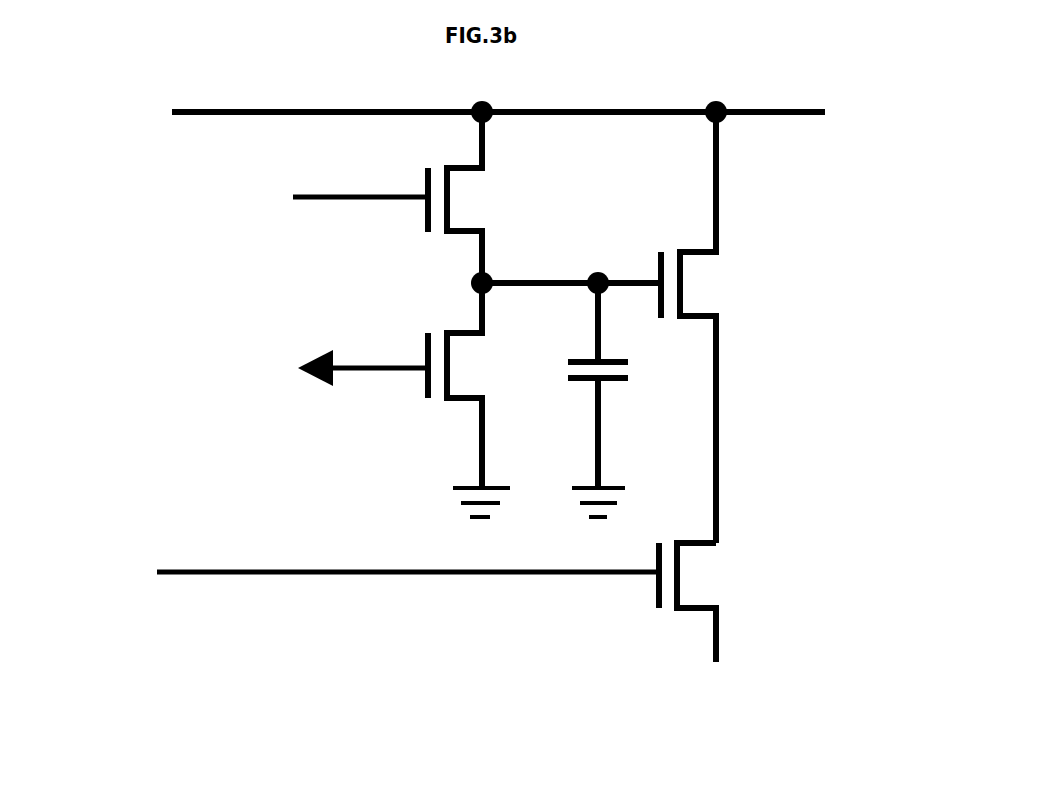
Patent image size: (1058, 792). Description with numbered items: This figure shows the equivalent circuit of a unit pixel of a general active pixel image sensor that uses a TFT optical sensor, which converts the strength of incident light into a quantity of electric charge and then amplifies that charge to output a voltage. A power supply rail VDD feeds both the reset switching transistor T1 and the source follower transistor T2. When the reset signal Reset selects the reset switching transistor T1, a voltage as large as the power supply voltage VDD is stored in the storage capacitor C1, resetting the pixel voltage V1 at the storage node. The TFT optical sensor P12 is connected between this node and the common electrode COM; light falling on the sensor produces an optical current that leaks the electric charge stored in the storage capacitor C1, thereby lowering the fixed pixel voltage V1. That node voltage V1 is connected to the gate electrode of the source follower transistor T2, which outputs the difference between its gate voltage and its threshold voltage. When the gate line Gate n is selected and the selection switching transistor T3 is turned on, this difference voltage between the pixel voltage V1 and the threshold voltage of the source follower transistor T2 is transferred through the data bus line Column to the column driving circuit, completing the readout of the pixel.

The reset switching transistor T1 is at (489, 197).
The source follower transistor T2 is at (723, 327).
The selection switching transistor T3 is at (722, 602).
The TFT optical sensor P12 is at (486, 400).
The storage capacitor C1 is at (626, 400).
The pixel voltage V1 is at (440, 276).
The power supply voltage VDD is at (552, 120).
The common electrode COM is at (295, 371).
The reset signal Reset is at (295, 194).
The n-th gate line Gate n is at (338, 565).
The data bus line Column is at (704, 702).